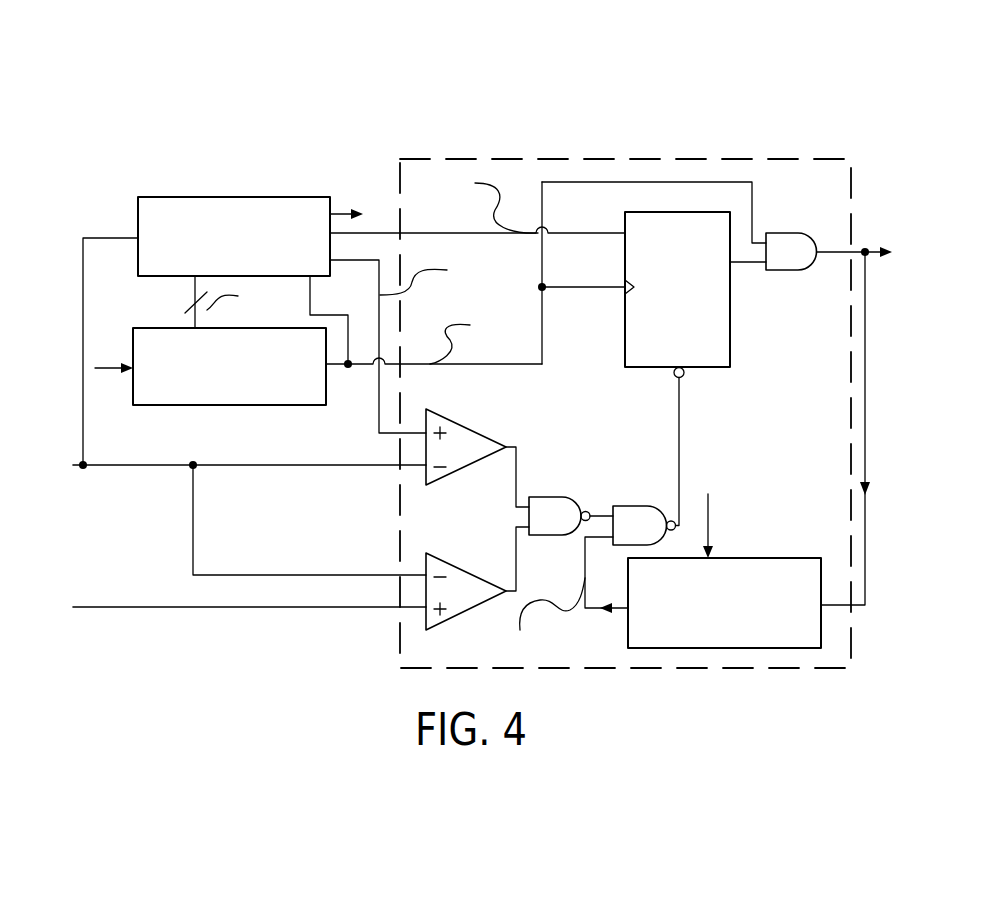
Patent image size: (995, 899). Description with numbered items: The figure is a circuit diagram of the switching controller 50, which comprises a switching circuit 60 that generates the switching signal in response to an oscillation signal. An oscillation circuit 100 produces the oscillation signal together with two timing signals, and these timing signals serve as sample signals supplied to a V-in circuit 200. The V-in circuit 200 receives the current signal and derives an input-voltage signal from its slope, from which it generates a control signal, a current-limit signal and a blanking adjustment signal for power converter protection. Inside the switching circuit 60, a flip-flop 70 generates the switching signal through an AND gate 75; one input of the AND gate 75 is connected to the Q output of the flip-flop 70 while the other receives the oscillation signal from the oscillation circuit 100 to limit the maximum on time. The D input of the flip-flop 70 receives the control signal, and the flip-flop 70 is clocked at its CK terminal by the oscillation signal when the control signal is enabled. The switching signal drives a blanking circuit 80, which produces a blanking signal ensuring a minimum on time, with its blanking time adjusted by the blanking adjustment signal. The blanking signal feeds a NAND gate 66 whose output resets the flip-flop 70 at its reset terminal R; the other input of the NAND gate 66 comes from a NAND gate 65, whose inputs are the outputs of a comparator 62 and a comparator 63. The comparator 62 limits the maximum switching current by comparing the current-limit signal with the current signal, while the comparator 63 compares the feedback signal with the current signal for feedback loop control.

The switching controller 50 is at (900, 22).
The switching circuit 60 is at (663, 158).
The comparator 62 is at (458, 420).
The comparator 63 is at (453, 564).
The NAND gate 65 is at (548, 497).
The NAND gate 66 is at (628, 506).
The flip-flop 70 is at (730, 348).
The AND gate 75 is at (790, 271).
The blanking circuit 80 is at (742, 558).
The oscillation circuit 100 is at (240, 405).
The V_IN-circuit 200 is at (215, 197).